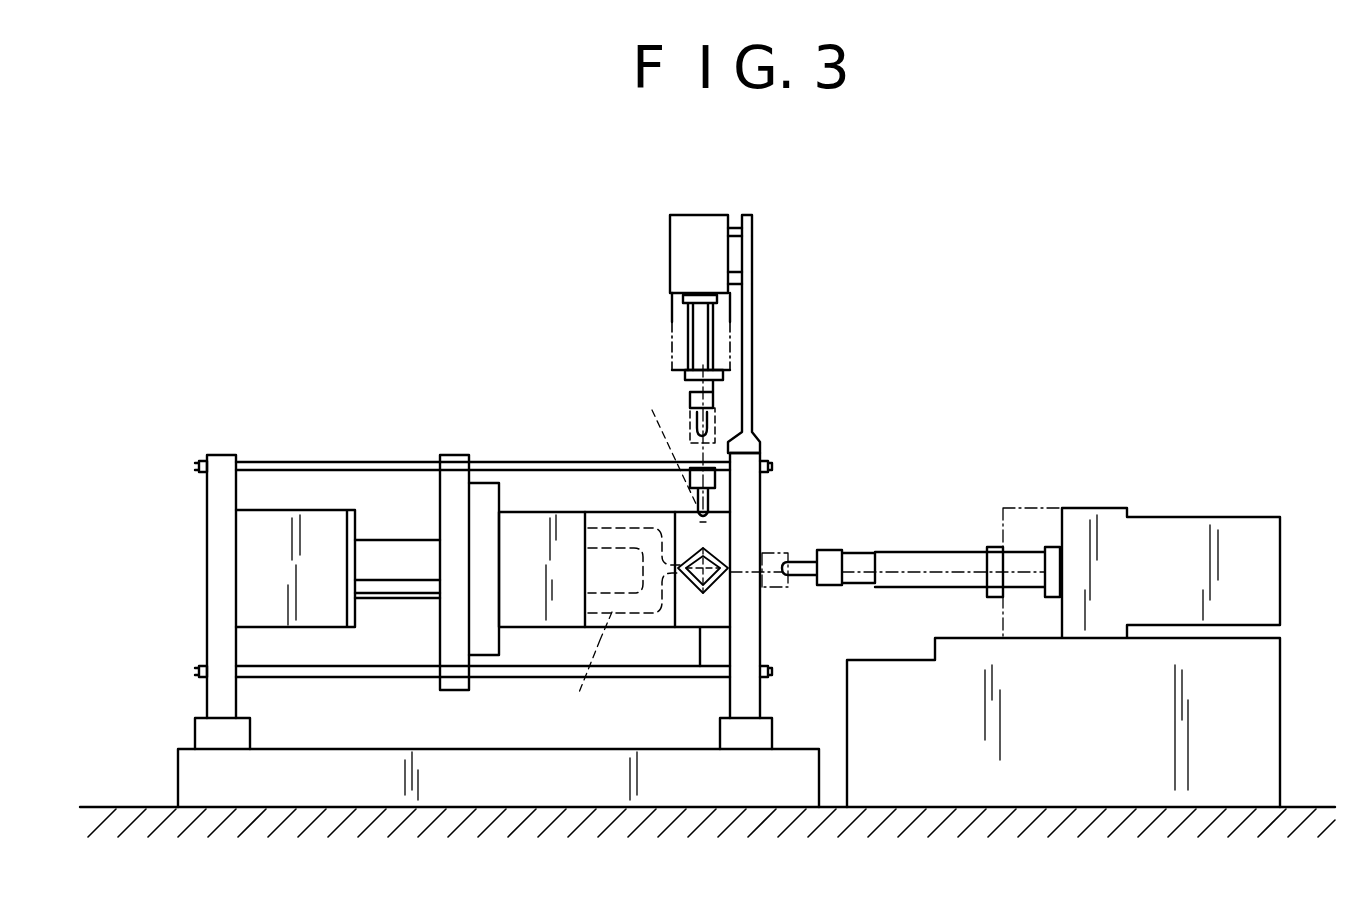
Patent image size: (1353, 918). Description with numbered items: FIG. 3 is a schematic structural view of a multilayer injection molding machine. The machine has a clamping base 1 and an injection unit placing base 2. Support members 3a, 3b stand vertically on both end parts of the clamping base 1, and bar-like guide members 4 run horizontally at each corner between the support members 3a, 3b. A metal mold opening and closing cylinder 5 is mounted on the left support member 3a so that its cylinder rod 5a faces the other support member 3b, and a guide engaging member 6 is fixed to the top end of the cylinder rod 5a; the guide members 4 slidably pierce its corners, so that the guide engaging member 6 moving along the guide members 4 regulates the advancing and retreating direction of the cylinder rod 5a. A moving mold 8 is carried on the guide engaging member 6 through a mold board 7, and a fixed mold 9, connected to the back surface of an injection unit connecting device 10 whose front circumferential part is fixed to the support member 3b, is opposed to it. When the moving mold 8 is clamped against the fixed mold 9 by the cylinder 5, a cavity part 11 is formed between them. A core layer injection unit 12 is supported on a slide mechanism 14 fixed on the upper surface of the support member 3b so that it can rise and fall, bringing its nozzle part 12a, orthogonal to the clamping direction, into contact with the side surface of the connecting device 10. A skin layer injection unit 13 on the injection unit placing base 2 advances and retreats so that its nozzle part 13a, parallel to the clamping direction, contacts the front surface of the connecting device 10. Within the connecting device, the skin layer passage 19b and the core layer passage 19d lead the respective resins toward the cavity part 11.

The clamping base 1 is at (187, 770).
The injection unit placing base 2 is at (1265, 707).
The support member 3a is at (222, 545).
The support member 3b is at (745, 655).
The guide members 4 is at (322, 462).
The metal mold opening and closing cylinder 5 is at (292, 596).
The cylinder rod 5a is at (398, 587).
The guide engaging member 6 is at (455, 455).
The mold board 7 is at (485, 483).
The moving mold 8 is at (552, 512).
The fixed mold 9 is at (620, 512).
The injection unit connecting device 10 is at (700, 630).
The cavity part 11 is at (595, 731).
The core layer injection unit 12 is at (670, 233).
The nozzle part 12a is at (697, 424).
The skin layer injection unit 13 is at (1213, 512).
The nozzle part 13a is at (735, 572).
The slide mechanism 14 is at (752, 250).
The skin layer passage 19b is at (735, 560).
The core layer passage 19d is at (703, 526).